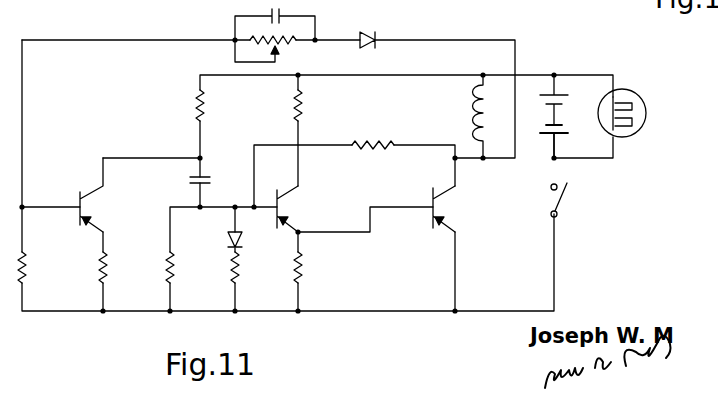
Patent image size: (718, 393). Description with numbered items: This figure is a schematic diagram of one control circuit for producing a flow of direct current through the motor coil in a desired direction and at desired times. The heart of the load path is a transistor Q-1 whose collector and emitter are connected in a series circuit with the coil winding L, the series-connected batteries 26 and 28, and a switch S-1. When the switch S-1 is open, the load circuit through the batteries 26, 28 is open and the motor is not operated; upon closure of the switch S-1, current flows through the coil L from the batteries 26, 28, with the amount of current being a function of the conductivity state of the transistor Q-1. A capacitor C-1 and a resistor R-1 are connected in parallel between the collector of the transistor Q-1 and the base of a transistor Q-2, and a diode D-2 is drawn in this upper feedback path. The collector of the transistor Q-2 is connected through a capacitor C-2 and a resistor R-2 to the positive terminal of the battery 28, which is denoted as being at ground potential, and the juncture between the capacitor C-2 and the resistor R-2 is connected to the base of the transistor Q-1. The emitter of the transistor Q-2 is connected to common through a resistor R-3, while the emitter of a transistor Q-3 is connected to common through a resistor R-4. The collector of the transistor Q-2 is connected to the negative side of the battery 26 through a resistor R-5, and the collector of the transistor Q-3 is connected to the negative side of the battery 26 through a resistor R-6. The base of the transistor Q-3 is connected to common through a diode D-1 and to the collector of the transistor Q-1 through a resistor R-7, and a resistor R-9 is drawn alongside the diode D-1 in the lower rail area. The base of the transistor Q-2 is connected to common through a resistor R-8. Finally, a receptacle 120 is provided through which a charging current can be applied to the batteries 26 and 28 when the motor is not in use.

The capacitor C-1 is at (275, 20).
The resistor R-1 is at (291, 47).
The diode D-2 is at (373, 31).
The resistor R-5 is at (211, 118).
The resistor R-6 is at (308, 112).
The resistor R-7 is at (381, 132).
The capacitor C-2 is at (218, 166).
The transistor Q-2 is at (93, 207).
The diode D-1 is at (222, 241).
The transistor Q-3 is at (287, 210).
The transistor Q-1 is at (442, 208).
The resistor R-8 is at (28, 276).
The resistor R-3 is at (108, 283).
The resistor R-2 is at (173, 283).
The resistor R-9 is at (244, 282).
The resistor R-4 is at (312, 268).
The inductor coil L is at (478, 116).
The battery 26 is at (582, 100).
The battery 28 is at (573, 141).
The receptacle 120 is at (646, 116).
The switch S-1 is at (562, 200).